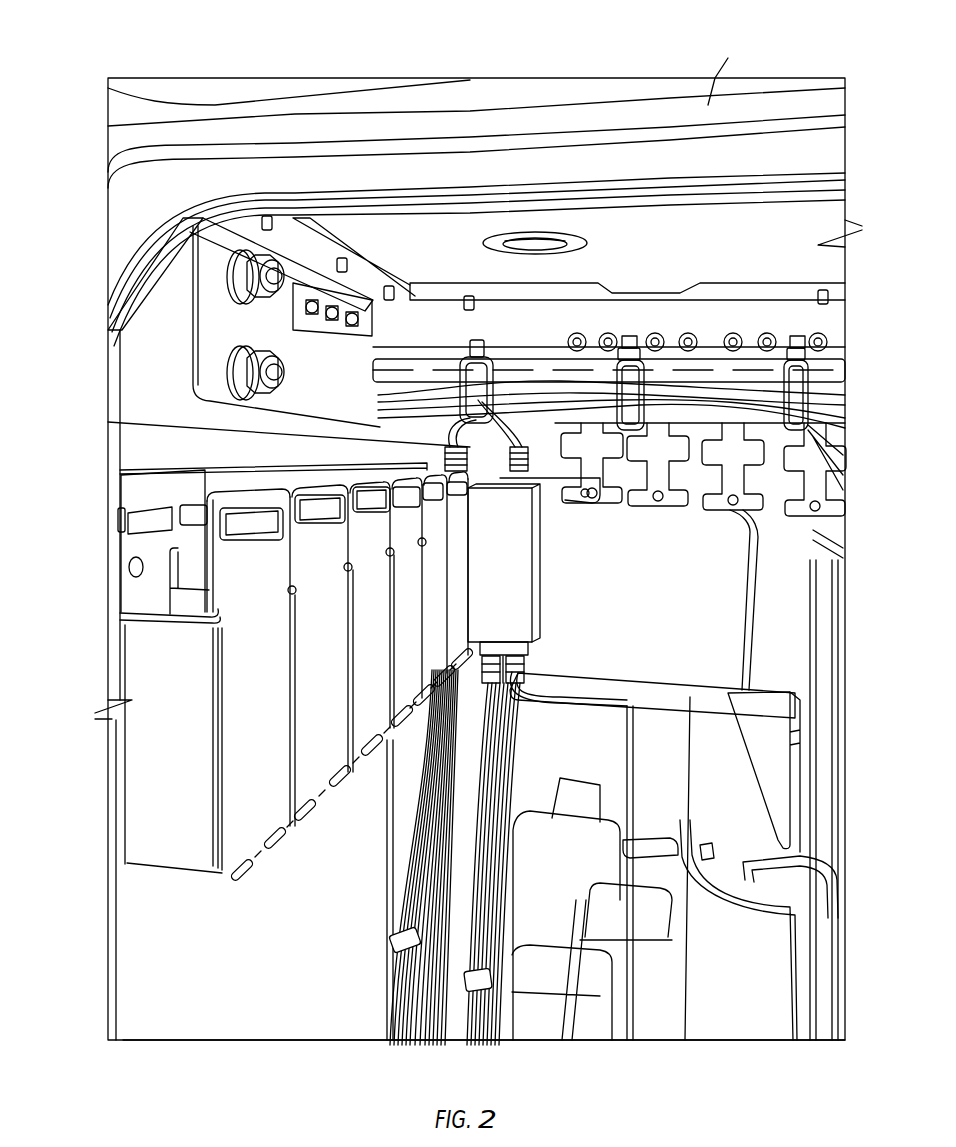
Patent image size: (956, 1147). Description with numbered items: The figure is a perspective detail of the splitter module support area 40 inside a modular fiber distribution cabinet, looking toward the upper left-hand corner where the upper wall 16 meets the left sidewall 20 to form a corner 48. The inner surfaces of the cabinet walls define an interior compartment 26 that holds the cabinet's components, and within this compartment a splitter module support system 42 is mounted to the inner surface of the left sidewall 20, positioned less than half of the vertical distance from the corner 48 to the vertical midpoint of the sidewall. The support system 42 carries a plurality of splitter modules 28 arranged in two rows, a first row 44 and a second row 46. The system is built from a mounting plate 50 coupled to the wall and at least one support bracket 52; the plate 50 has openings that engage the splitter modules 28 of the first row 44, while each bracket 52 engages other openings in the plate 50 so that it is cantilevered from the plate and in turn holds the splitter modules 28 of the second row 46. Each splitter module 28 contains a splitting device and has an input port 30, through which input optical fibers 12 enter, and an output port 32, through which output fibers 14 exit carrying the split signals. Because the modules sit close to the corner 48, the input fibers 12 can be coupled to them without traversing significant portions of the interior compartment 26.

The input optical fibers 12 is at (770, 405).
The output fibers 14 is at (393, 957).
The upper wall 16 is at (746, 166).
The left sidewall 20 is at (196, 1005).
The interior compartment 26 is at (783, 571).
The splitter modules 28 is at (516, 552).
The input port 30 is at (445, 458).
The output port 32 is at (548, 668).
The splitter module support area 40 is at (583, 185).
The splitter module support system 42 is at (196, 815).
The first row 44 is at (394, 466).
The second row 46 is at (505, 600).
The corner 48 is at (211, 251).
The plate 50 is at (145, 492).
The bracket 52 is at (185, 673).